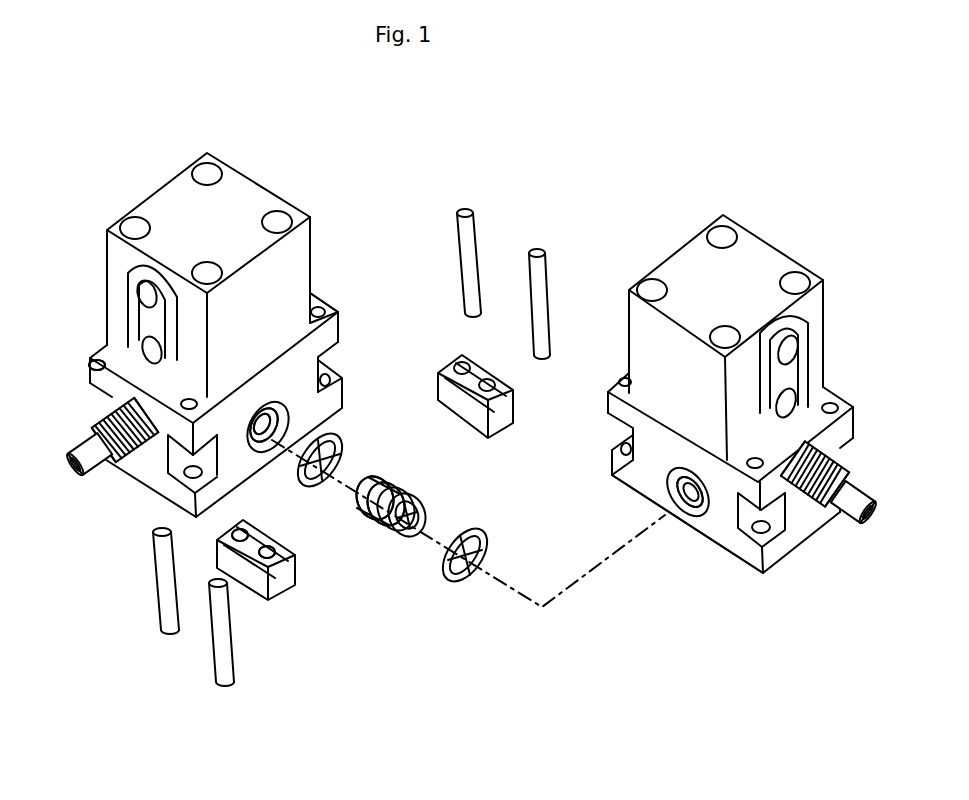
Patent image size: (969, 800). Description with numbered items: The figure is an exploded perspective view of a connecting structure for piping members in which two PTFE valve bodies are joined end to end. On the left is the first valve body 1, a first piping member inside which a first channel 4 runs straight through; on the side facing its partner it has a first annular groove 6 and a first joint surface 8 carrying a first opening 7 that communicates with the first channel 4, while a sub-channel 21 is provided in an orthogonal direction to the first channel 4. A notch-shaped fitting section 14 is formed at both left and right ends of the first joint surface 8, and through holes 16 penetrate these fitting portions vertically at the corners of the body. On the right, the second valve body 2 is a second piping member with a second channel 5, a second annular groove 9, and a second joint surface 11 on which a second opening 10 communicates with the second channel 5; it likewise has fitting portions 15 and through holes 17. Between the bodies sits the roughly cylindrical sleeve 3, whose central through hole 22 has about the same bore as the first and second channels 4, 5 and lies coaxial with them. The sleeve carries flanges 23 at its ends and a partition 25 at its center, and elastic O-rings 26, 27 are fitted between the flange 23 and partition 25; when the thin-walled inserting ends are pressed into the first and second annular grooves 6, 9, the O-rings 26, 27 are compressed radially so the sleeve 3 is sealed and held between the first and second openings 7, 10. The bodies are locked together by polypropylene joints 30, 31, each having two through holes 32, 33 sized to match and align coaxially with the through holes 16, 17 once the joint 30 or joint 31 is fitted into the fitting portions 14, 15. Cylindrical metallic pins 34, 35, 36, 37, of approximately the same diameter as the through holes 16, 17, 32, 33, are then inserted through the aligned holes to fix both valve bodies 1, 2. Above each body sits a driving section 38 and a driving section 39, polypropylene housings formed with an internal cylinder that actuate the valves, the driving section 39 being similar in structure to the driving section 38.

The first valve body 1 is at (107, 385).
The second valve body 2 is at (803, 520).
The sleeve 3 is at (420, 505).
The first channel 4 is at (273, 440).
The second channel 5 is at (680, 513).
The first annular groove 6 is at (312, 395).
The first opening 7 is at (318, 412).
The first joint surface 8 is at (340, 336).
The second annular groove 9 is at (670, 473).
The second opening 10 is at (682, 497).
The second joint surface 11 is at (733, 543).
The fitting section 14 is at (175, 482).
The fitting portion 15 is at (777, 510).
The through hole 16 is at (115, 392).
The through hole 17 is at (803, 512).
The sub-channel 21 is at (75, 463).
The through hole 22 is at (405, 530).
The flange 23 is at (390, 478).
The partition 25 is at (375, 527).
The O-ring 26 is at (330, 435).
The O-ring 27 is at (480, 530).
The joint 30 is at (283, 590).
The joint 31 is at (500, 415).
The through hole 32 is at (250, 532).
The through hole 33 is at (275, 548).
The pin 34 is at (165, 598).
The pin 35 is at (225, 650).
The pin 36 is at (468, 255).
The pin 37 is at (543, 316).
The driving section 38 is at (163, 208).
The driving section 39 is at (758, 276).